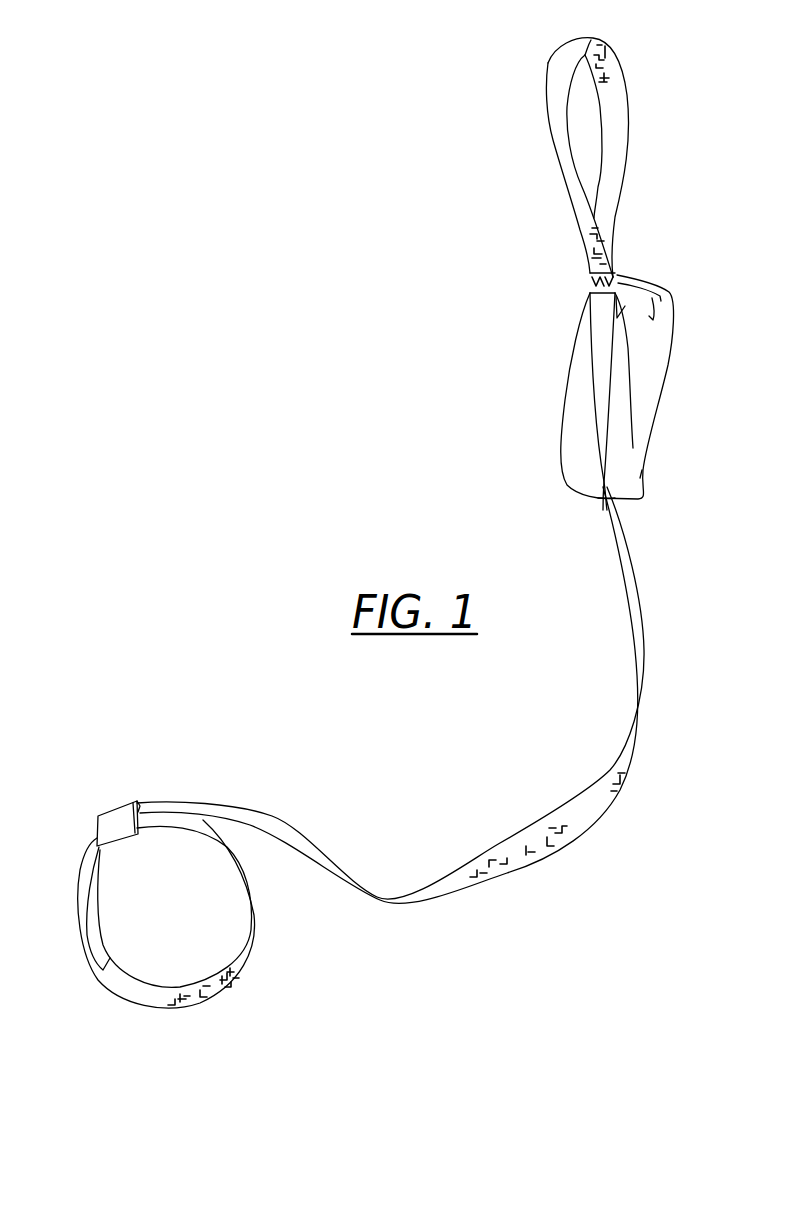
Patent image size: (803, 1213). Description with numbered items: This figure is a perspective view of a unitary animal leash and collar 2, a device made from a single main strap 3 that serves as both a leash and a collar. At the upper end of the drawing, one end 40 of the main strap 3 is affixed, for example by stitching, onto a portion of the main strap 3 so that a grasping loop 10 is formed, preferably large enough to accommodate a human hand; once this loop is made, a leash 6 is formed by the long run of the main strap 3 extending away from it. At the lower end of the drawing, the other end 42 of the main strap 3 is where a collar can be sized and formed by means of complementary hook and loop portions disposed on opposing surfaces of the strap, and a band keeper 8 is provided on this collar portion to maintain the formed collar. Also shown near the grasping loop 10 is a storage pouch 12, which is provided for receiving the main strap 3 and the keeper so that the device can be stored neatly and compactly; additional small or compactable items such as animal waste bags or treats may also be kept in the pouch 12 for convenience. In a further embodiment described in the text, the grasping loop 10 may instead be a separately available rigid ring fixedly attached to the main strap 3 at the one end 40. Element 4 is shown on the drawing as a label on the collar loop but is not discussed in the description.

The unitary animal leash and collar 2 is at (679, 949).
The main strap 3 is at (597, 807).
The wrist loop 4 is at (255, 897).
The leash 6 is at (661, 575).
The band keeper 8 is at (111, 810).
The grasping loop 10 is at (628, 99).
The storage pouch 12 is at (660, 383).
The one end of the main strap 40 is at (654, 163).
The other end of the main strap 42 is at (245, 1028).